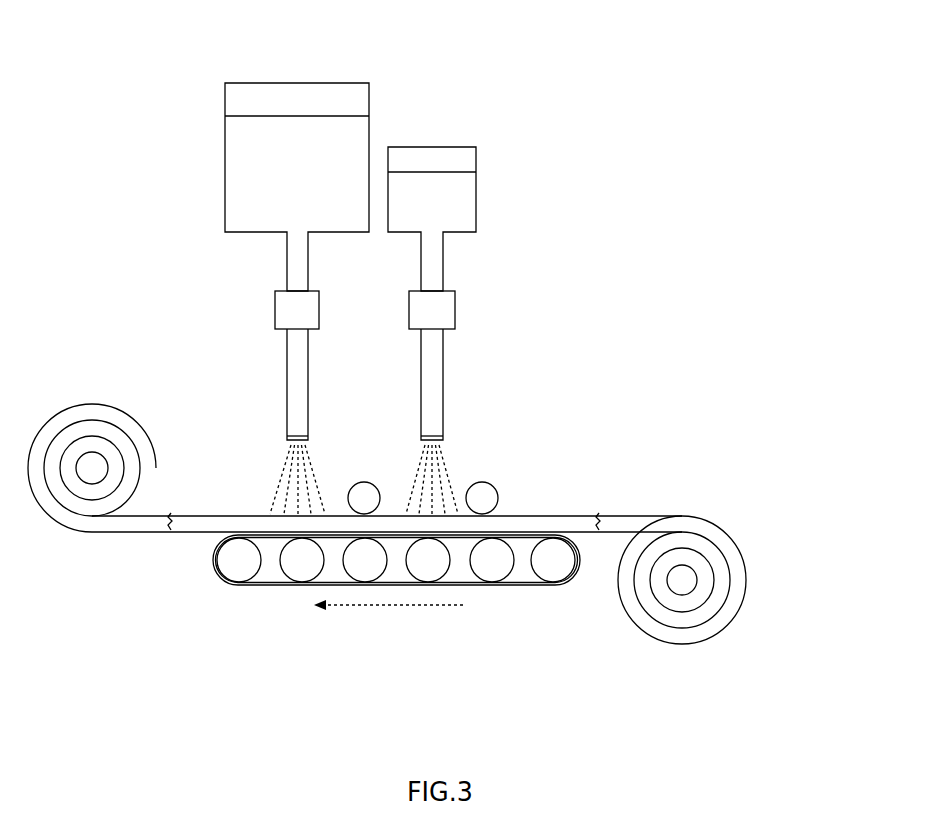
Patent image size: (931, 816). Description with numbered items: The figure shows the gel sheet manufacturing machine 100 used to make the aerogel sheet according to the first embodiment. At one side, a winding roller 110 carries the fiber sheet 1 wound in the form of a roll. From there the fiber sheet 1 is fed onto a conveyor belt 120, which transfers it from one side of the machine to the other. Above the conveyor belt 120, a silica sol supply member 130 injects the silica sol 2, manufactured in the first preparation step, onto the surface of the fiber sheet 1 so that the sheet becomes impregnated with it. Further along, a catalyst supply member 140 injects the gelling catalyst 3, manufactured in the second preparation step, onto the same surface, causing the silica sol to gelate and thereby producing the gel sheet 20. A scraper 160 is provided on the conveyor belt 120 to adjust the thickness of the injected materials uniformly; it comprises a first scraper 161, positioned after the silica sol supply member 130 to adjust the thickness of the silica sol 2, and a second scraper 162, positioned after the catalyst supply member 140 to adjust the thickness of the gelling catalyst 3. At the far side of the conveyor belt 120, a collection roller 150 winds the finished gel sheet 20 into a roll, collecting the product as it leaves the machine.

The gel sheet manufacturing machine 100 is at (560, 80).
The silica sol supply member 130 is at (295, 83).
The silica sol 2 is at (228, 157).
The catalyst supply member 140 is at (431, 147).
The gelling catalyst 3 is at (473, 188).
The winding roller 110 is at (92, 468).
The fiber sheet 1 is at (52, 417).
The conveyor belt 120 is at (220, 582).
The scraper 160 is at (505, 407).
The first scraper 161 is at (378, 486).
The second scraper 162 is at (489, 484).
The collection roller 150 is at (682, 580).
The gel sheet 20 is at (730, 537).